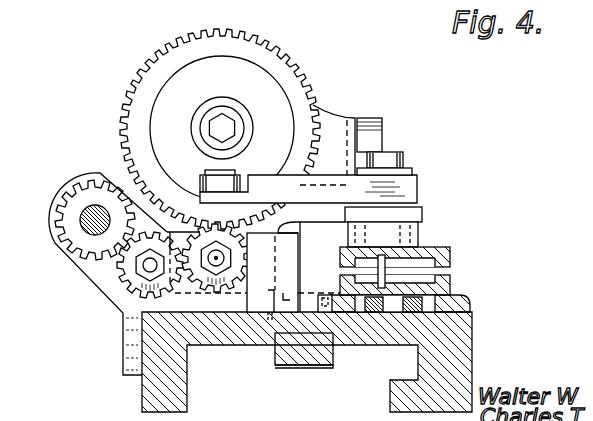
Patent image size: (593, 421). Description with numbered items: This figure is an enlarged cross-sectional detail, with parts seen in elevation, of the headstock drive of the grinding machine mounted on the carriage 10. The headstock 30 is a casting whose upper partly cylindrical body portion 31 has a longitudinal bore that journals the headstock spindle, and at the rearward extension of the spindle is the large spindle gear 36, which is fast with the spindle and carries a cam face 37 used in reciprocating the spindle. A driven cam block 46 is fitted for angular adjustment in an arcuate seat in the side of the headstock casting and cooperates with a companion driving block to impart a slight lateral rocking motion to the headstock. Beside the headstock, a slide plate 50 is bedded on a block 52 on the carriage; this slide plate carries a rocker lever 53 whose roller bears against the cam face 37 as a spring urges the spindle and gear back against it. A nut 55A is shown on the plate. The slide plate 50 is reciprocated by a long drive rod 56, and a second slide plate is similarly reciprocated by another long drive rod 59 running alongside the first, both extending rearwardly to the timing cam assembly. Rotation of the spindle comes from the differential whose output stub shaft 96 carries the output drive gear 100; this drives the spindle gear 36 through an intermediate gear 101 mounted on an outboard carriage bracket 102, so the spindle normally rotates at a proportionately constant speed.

The carriage 10 is at (474, 340).
The headstock 30 is at (92, 132).
The upper partly cylindrical body portion 31 is at (340, 100).
The spindle gear 36 is at (150, 72).
The cam face 37 is at (214, 88).
The driven cam block 46 is at (373, 151).
The slide plate 50 is at (450, 257).
The block 52 is at (450, 274).
The rocker lever 53 is at (418, 188).
The nut 55A is at (200, 181).
The long drive rod 56 is at (368, 313).
The long drive rod 59 is at (410, 313).
The output stub shaft 96 is at (80, 221).
The output drive gear 100 is at (70, 232).
The intermediate gear 101 is at (118, 270).
The outboard carriage bracket 102 is at (101, 291).